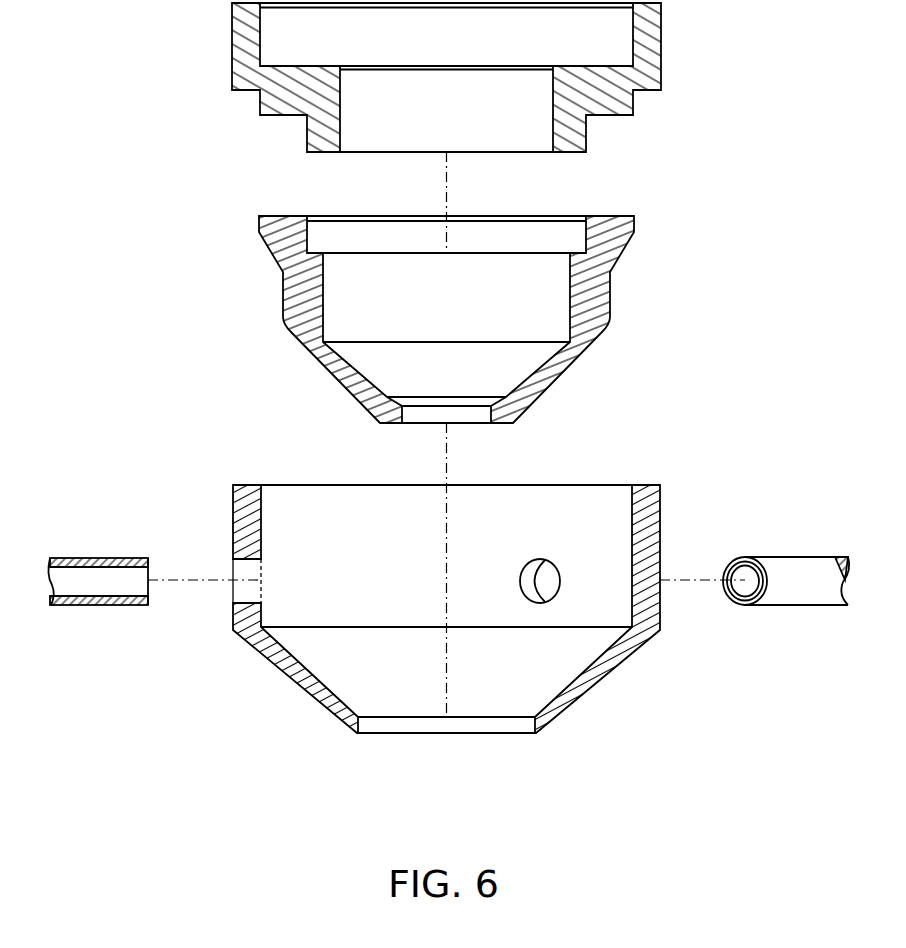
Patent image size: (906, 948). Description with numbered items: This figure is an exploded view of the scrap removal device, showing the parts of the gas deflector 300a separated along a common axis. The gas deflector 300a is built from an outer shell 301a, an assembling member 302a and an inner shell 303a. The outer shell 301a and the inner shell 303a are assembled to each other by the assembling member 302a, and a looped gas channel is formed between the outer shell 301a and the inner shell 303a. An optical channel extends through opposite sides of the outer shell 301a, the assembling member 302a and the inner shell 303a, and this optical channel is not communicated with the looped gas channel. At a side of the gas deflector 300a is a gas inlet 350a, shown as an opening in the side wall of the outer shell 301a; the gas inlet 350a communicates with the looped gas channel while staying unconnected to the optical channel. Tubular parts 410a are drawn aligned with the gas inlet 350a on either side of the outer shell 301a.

The gas deflector 300a is at (495, 368).
The outer shell 301a is at (464, 609).
The assembling member 302a is at (652, 63).
The inner shell 303a is at (602, 283).
The gas inlet 350a is at (245, 590).
The tube 410a is at (97, 562).